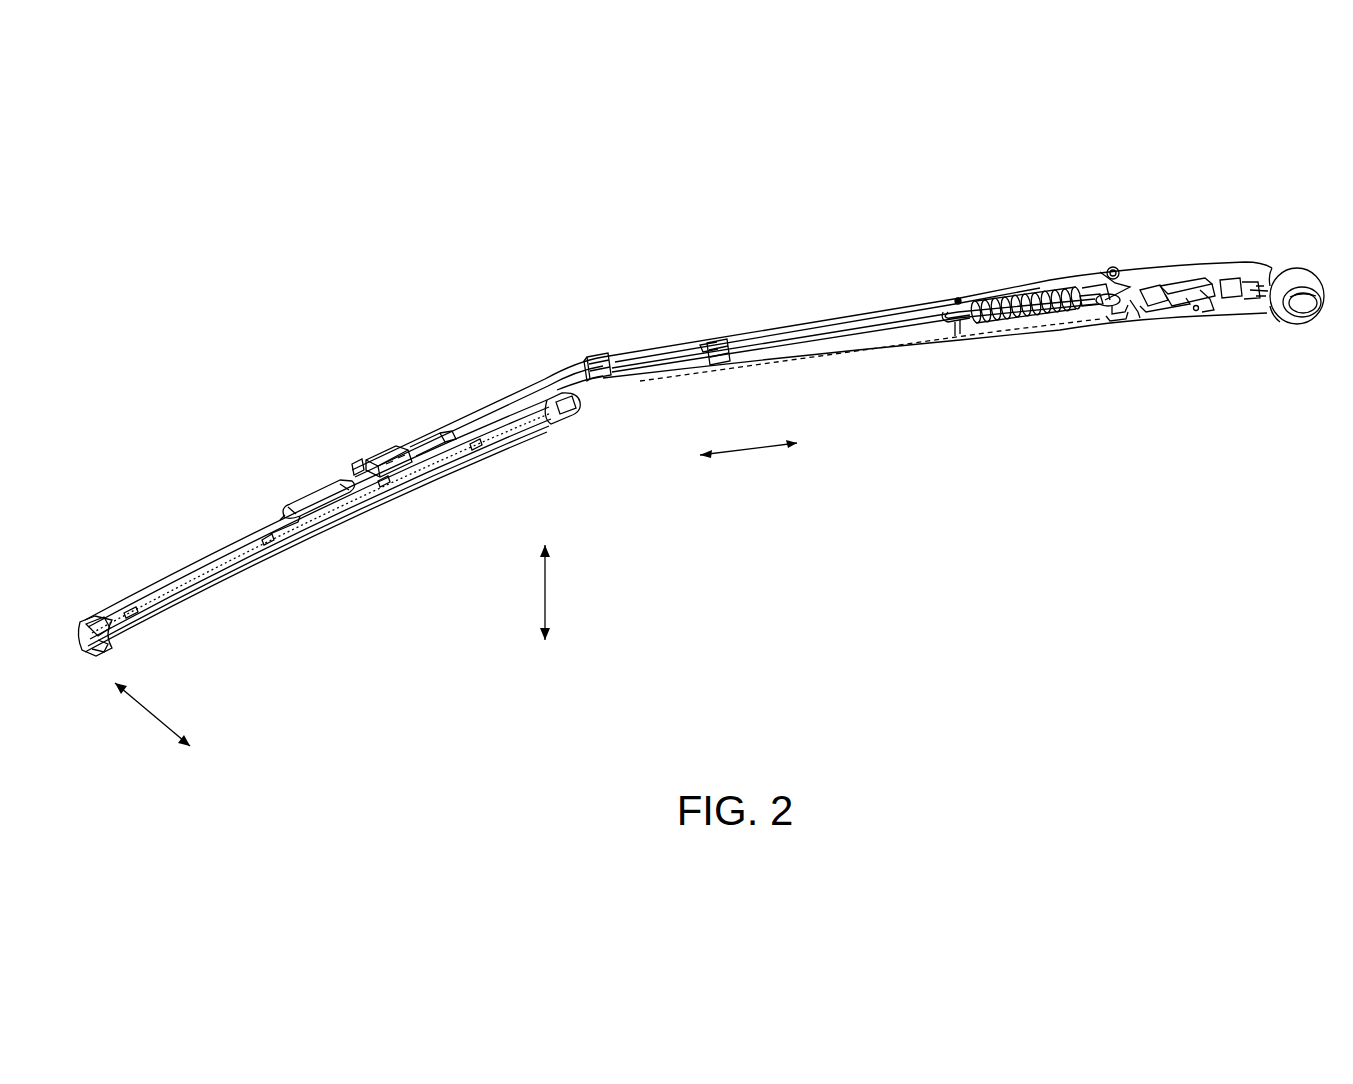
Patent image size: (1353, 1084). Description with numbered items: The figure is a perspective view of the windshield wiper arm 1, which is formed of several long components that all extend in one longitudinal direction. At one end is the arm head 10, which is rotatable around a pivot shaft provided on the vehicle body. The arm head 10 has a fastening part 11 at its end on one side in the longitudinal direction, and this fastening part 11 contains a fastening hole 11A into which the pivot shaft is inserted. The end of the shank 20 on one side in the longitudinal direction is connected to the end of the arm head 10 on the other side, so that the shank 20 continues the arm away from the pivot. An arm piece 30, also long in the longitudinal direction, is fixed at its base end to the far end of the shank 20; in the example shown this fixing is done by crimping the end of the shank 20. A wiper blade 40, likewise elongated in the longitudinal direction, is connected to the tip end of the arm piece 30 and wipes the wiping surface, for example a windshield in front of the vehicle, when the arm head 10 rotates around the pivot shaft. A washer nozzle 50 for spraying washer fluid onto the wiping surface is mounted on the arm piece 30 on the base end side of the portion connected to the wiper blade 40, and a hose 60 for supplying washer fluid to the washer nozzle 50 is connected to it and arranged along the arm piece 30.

The windshield wiper arm 1 is at (703, 264).
The arm head 10 is at (1170, 261).
The fastening part 11 is at (1300, 265).
The fastening hole 11A is at (1306, 320).
The shank 20 is at (991, 284).
The arm piece 30 is at (568, 360).
The wiper blade 40 is at (157, 582).
The washer nozzle 50 is at (384, 455).
The hose 60 is at (905, 324).